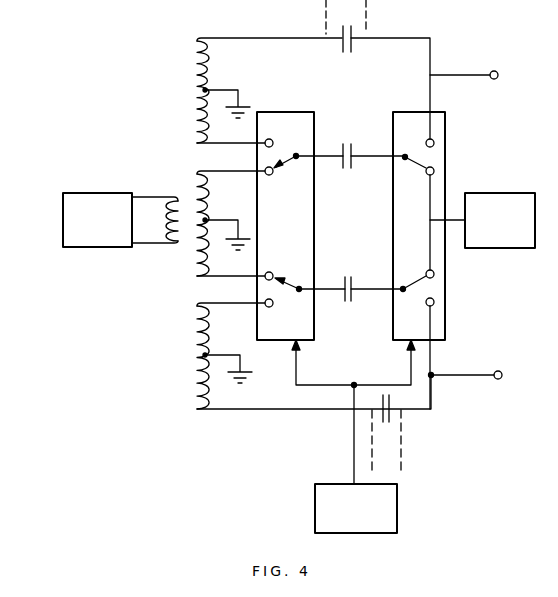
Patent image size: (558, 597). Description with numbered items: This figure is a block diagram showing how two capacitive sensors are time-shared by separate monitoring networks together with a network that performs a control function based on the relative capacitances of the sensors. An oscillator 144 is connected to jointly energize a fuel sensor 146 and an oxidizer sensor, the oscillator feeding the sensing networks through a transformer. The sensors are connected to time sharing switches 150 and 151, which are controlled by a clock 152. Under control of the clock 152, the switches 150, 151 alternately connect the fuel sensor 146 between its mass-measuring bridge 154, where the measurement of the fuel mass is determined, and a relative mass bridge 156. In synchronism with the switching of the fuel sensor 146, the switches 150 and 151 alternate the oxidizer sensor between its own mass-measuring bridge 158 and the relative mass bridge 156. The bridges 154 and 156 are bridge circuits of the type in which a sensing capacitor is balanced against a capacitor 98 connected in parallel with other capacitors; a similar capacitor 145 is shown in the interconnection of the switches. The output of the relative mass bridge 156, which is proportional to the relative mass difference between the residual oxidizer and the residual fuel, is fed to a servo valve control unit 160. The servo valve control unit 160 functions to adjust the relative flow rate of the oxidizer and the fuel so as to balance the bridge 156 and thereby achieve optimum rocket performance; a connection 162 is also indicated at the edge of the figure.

The capacitor 98 is at (340, 28).
The oscillator 144 is at (116, 238).
The capacitor 145 is at (360, 257).
The fuel sensor 146 is at (344, 143).
The time sharing switch 150 is at (302, 313).
The time sharing switch 151 is at (403, 318).
The clock 152 is at (389, 510).
The mass-measuring bridge 154 is at (399, 38).
The relative mass bridge 156 is at (442, 195).
The mass-measuring bridge 158 is at (462, 368).
The servo valve control unit 160 is at (496, 192).
The conductor 162 is at (546, 360).